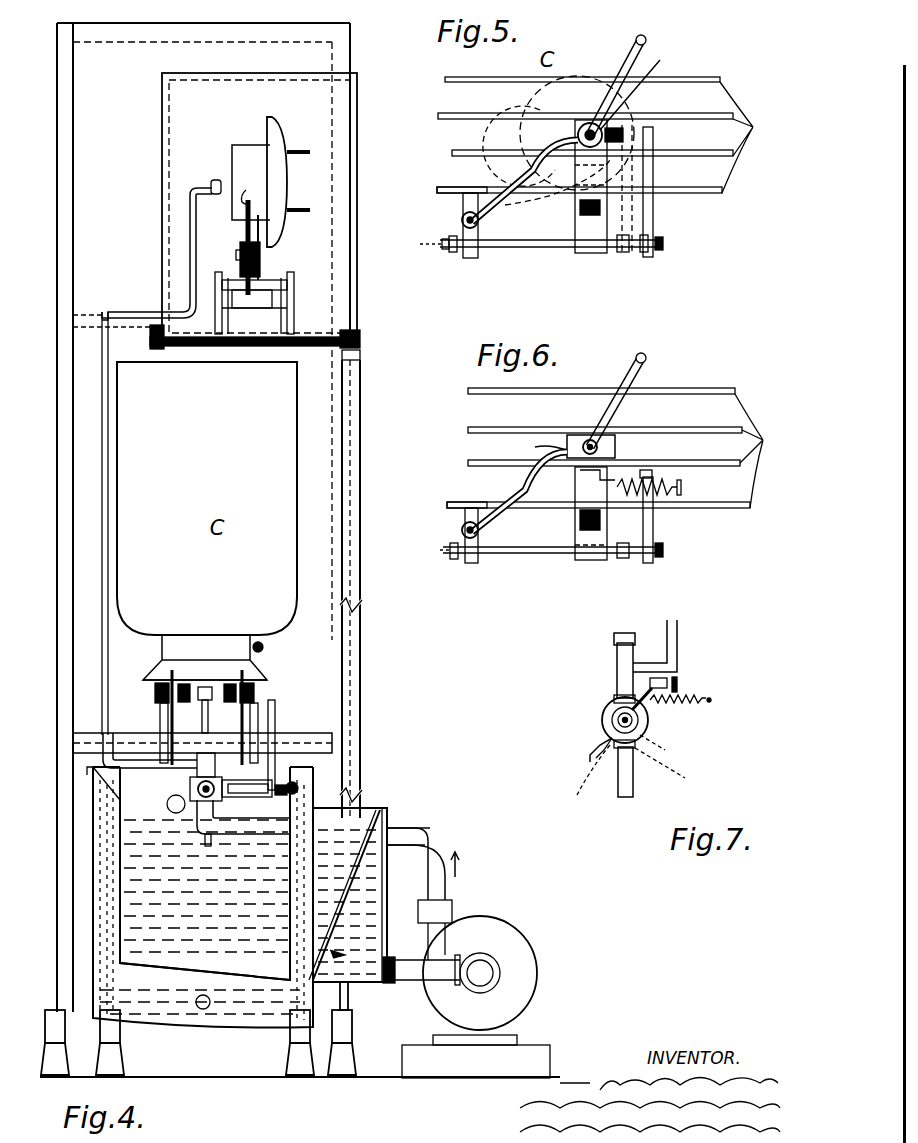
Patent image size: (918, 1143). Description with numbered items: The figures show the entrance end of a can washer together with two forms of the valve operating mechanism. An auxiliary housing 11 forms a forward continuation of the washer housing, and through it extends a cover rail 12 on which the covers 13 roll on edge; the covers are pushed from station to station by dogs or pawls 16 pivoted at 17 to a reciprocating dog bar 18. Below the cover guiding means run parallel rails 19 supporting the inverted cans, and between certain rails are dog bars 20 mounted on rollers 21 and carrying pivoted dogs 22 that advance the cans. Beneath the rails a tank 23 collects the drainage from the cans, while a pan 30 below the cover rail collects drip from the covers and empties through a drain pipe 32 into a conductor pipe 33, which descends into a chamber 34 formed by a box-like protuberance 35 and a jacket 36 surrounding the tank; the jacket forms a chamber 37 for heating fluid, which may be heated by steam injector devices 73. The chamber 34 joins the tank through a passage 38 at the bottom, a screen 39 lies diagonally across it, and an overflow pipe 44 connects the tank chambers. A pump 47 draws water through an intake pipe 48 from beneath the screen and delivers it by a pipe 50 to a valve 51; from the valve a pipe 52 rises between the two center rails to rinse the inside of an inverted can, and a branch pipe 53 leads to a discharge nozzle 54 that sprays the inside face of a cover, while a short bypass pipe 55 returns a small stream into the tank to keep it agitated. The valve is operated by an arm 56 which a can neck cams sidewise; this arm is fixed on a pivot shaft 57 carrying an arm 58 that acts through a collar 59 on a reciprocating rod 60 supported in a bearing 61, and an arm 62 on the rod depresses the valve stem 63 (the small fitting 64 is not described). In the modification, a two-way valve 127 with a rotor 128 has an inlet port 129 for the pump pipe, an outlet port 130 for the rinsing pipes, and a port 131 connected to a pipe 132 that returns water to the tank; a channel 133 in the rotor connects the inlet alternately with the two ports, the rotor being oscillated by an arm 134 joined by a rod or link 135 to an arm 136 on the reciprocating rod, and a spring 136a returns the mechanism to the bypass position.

In FIG. 4, the auxiliary housing 11 is at (207, 517).
In FIG. 4, the cover rail 12 is at (262, 278).
In FIG. 4, the covers 13 is at (280, 185).
In FIG. 4, the dogs or pawls 16 is at (251, 182).
In FIG. 4, the pivot 17 is at (240, 248).
In FIG. 4, the dog bar 18 is at (240, 262).
In FIG. 4, the rails 19 is at (222, 672).
In FIG. 5, the rails 19 is at (608, 135).
In FIG. 6, the rails 19 is at (616, 448).
In FIG. 4, the dog bars 20 is at (158, 712).
In FIG. 4, the rollers 21 is at (250, 715).
In FIG. 4, the dogs 22 is at (158, 690).
In FIG. 4, the tank 23 is at (120, 783).
In FIG. 4, the pan 30 is at (235, 347).
In FIG. 4, the drain pipe 32 is at (362, 352).
In FIG. 4, the conductor pipe 33 is at (361, 405).
In FIG. 4, the chamber 34 is at (370, 805).
In FIG. 4, the box-like protuberance 35 is at (388, 858).
In FIG. 4, the jacket 36 is at (90, 890).
In FIG. 4, the chamber for heating fluid 37 is at (160, 1010).
In FIG. 4, the passage 38 is at (300, 988).
In FIG. 4, the screen 39 is at (388, 905).
In FIG. 4, the overflow pipe 44 is at (189, 777).
In FIG. 4, the pump 47 is at (505, 935).
In FIG. 4, the intake pipe 48 is at (440, 962).
In FIG. 4, the pipe 50 is at (430, 823).
In FIG. 7, the pipe 50 is at (633, 790).
In FIG. 4, the valve 51 is at (198, 838).
In FIG. 5, the valve 51 is at (640, 89).
In FIG. 4, the pipe 52 is at (160, 740).
In FIG. 5, the pipe 52 is at (575, 130).
In FIG. 6, the pipe 52 is at (598, 445).
In FIG. 7, the pipe 52 is at (615, 650).
In FIG. 4, the branch pipe 53 is at (103, 457).
In FIG. 5, the branch pipe 53 is at (634, 44).
In FIG. 6, the branch pipe 53 is at (640, 372).
In FIG. 7, the branch pipe 53 is at (677, 630).
In FIG. 4, the discharge nozzle 54 is at (215, 180).
In FIG. 4, the bypass pipe 55 is at (215, 846).
In FIG. 4, the arm 56 is at (280, 638).
In FIG. 5, the arm 56 is at (522, 178).
In FIG. 6, the arm 56 is at (525, 497).
In FIG. 5, the pivot shaft 57 is at (462, 220).
In FIG. 6, the pivot shaft 57 is at (462, 530).
In FIG. 5, the arm 58 is at (470, 262).
In FIG. 6, the arm 58 is at (470, 565).
In FIG. 5, the collar 59 is at (445, 250).
In FIG. 6, the collar 59 is at (450, 560).
In FIG. 5, the reciprocating rod 60 is at (545, 243).
In FIG. 4, the bearing 61 is at (287, 787).
In FIG. 5, the bearing 61 is at (590, 253).
In FIG. 6, the bearing 61 is at (591, 513).
In FIG. 4, the arm 62 is at (240, 798).
In FIG. 5, the arm 62 is at (653, 222).
In FIG. 5, the valve stem 63 is at (630, 110).
In FIG. 4, the fitting 64 is at (302, 788).
In FIG. 4, the steam injector devices 73 is at (203, 1009).
In FIG. 6, the two-way valve 127 is at (615, 450).
In FIG. 7, the two-way valve 127 is at (602, 718).
In FIG. 7, the rotor 128 is at (603, 730).
In FIG. 7, the inlet port 129 is at (681, 771).
In FIG. 7, the outlet port 130 is at (617, 698).
In FIG. 7, the port 131 is at (581, 782).
In FIG. 6, the pipe 132 is at (548, 445).
In FIG. 7, the pipe 132 is at (590, 758).
In FIG. 7, the channel 133 is at (673, 752).
In FIG. 6, the arm 134 is at (600, 482).
In FIG. 7, the arm 134 is at (640, 707).
In FIG. 6, the rod or link 135 is at (660, 490).
In FIG. 7, the rod or link 135 is at (660, 678).
In FIG. 6, the arm 136 is at (653, 530).
In FIG. 7, the arm 136 is at (677, 684).
In FIG. 6, the spring 136a is at (640, 480).
In FIG. 7, the spring 136a is at (700, 703).